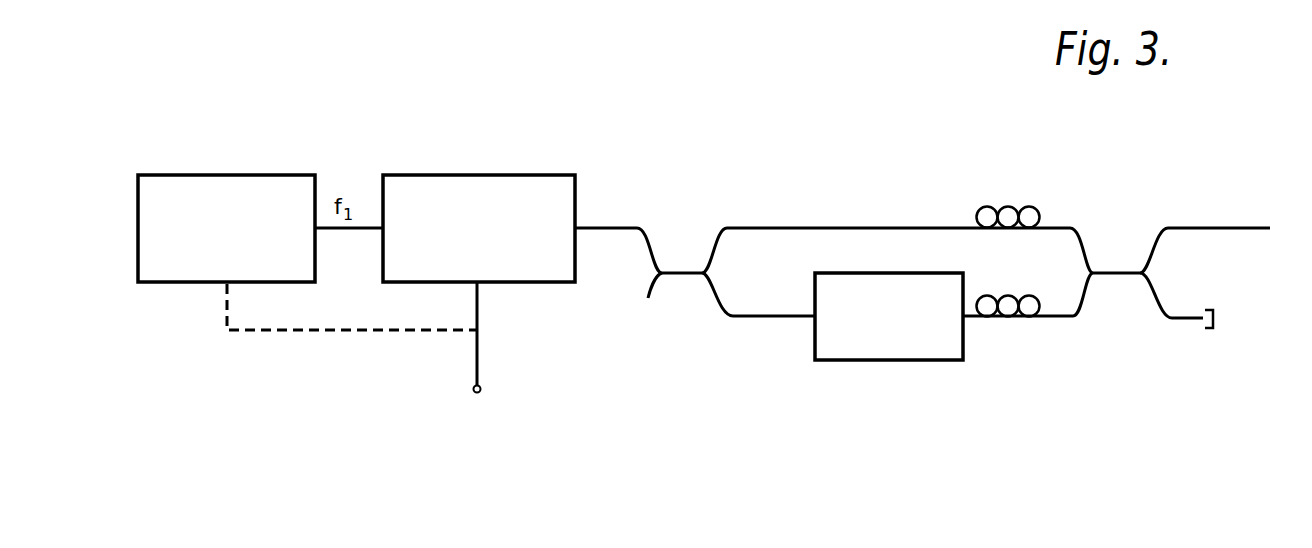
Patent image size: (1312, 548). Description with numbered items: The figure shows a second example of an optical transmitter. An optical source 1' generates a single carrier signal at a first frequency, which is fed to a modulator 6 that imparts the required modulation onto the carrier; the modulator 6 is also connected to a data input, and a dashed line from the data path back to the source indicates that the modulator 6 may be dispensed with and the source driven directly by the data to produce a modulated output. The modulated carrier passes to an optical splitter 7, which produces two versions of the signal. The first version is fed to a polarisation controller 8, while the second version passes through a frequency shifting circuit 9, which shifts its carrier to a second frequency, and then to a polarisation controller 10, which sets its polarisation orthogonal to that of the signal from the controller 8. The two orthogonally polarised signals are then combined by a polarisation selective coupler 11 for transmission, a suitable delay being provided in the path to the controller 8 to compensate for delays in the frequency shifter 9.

The optical source 1' is at (225, 196).
The modulator 6 is at (537, 175).
The optical splitter 7 is at (685, 275).
The polarisation controller 8 is at (995, 207).
The frequency shifting circuit 9 is at (933, 360).
The polarisation controller 10 is at (999, 296).
The polarisation selective coupler 11 is at (1120, 275).